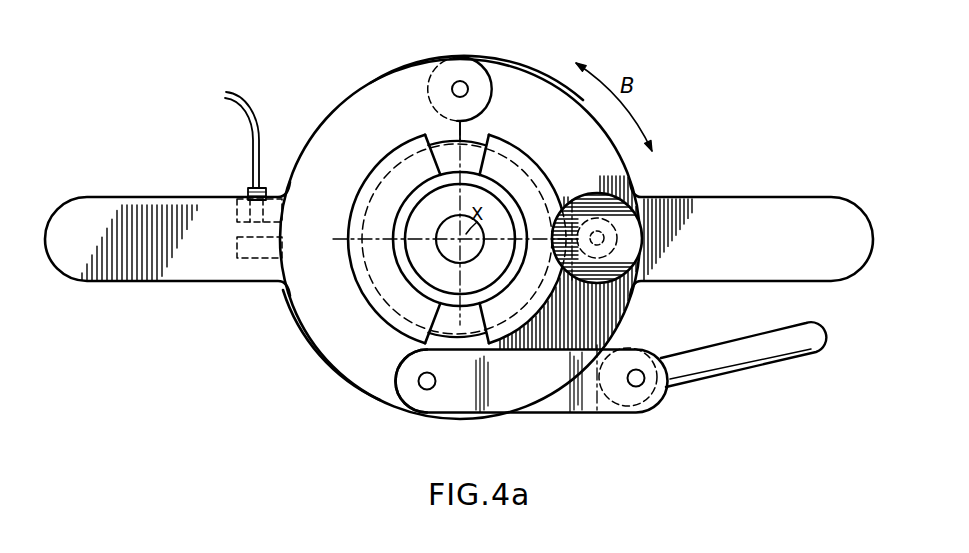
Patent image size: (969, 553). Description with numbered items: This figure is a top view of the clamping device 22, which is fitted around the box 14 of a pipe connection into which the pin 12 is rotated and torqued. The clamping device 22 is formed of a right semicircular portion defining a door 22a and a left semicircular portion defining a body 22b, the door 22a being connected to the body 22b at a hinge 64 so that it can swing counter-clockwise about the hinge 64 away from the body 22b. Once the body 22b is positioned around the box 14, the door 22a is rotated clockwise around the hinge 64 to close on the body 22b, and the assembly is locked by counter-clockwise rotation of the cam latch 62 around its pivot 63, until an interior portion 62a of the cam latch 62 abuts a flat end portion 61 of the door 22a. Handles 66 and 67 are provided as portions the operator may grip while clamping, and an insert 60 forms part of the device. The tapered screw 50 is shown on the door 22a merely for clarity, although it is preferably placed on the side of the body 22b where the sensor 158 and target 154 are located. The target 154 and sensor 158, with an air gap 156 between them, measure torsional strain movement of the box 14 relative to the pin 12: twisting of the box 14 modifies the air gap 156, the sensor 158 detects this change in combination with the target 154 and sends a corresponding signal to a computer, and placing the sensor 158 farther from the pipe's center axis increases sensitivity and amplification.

The clamping device 22 is at (652, 63).
The door 22a is at (530, 72).
The body 22b is at (297, 320).
The hinge 64 is at (452, 82).
The insert 60 is at (383, 158).
The pin 12 is at (418, 289).
The tapered screw 50 is at (628, 202).
The handle 66 is at (808, 283).
The handle 67 is at (173, 263).
The box 14 is at (449, 336).
The pivot 63 is at (418, 394).
The flat end portion 61 is at (598, 378).
The interior portion 62a is at (640, 407).
The cam latch 62 is at (760, 368).
The sensor 158 is at (245, 190).
The air gap 156 is at (253, 232).
The target 154 is at (250, 258).